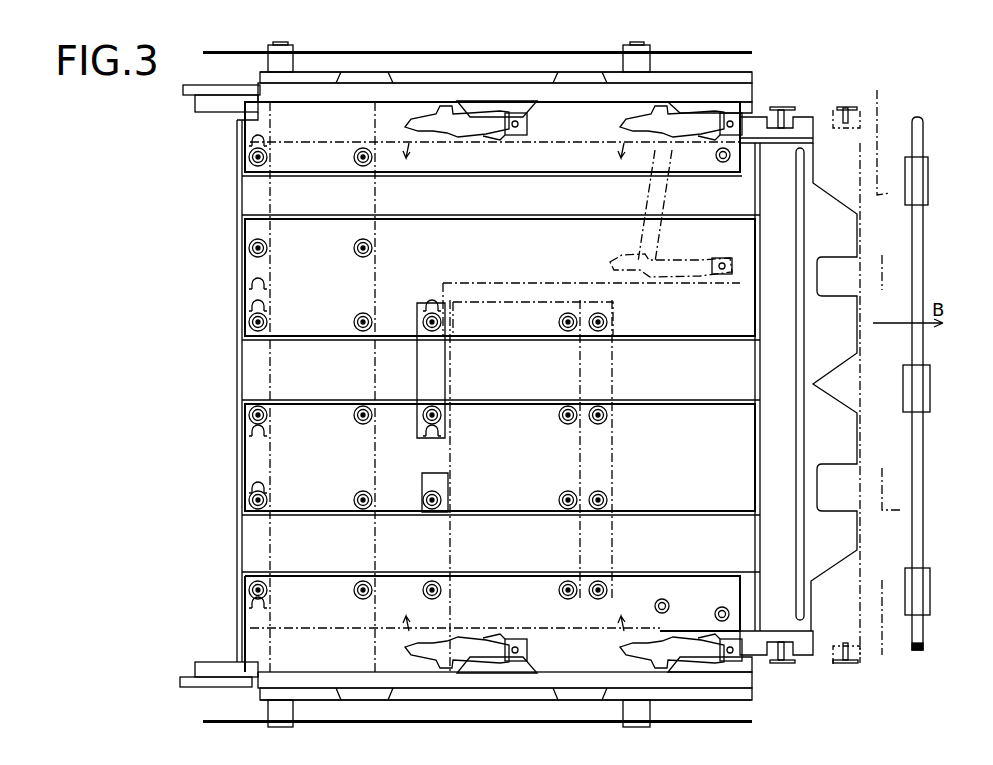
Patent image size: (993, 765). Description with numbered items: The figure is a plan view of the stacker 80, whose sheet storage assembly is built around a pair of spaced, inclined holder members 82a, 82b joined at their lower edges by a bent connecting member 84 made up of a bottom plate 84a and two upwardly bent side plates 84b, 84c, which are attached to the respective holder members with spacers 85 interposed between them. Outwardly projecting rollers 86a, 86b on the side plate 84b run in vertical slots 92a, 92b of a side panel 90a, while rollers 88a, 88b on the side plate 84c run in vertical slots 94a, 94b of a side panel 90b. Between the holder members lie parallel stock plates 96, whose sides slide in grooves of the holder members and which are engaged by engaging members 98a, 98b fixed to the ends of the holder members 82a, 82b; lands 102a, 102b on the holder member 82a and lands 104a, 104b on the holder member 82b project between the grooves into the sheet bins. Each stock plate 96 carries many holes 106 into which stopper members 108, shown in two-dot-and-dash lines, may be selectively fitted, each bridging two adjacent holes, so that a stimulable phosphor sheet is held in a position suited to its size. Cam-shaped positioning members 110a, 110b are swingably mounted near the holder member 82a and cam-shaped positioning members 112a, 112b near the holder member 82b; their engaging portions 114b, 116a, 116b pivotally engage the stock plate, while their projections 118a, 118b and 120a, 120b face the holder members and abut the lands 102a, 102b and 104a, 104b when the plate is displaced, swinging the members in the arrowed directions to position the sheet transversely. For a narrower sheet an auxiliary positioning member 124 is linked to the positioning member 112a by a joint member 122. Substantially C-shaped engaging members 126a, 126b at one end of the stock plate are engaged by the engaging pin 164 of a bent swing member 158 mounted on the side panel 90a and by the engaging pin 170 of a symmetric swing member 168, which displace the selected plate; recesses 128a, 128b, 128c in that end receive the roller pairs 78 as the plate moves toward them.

The roller pairs 78 is at (925, 128).
The stacker 80 is at (183, 373).
The holder member 82a is at (258, 682).
The holder member 82b is at (262, 103).
The connecting member 84 is at (471, 690).
The bottom plate 84a is at (497, 697).
The side plate 84b is at (426, 700).
The side plate 84c is at (448, 72).
The spacers 85 is at (377, 82).
The roller 86a is at (633, 727).
The roller 86b is at (282, 727).
The roller 88a is at (639, 45).
The roller 88b is at (276, 45).
The side panel 90a is at (203, 722).
The side panel 90b is at (243, 52).
The vertical slot 92a is at (652, 727).
The vertical slot 92b is at (262, 727).
The vertical slot 94a is at (664, 50).
The vertical slot 94b is at (300, 46).
The stock plates 96 is at (877, 117).
The engaging member 98a is at (214, 666).
The engaging member 98b is at (205, 103).
The land 102a is at (717, 670).
The land 102b is at (513, 665).
The land 104a is at (720, 105).
The land 104b is at (490, 101).
The holes 106 is at (378, 170).
The stopper members 108 is at (240, 185).
The cam-shaped positioning member 110a is at (695, 650).
The cam-shaped positioning member 110b is at (479, 598).
The cam-shaped positioning member 112a is at (714, 122).
The cam-shaped positioning member 112b is at (507, 154).
The engaging portion 114b is at (514, 650).
The engaging portion 116a is at (742, 112).
The engaging portion 116b is at (530, 120).
The projection 118a is at (654, 598).
The projection 118b is at (451, 598).
The projection 120a is at (713, 122).
The projection 120b is at (474, 154).
The joint member 122 is at (640, 188).
The auxiliary positioning member 124 is at (605, 264).
The C-shaped engaging member 126a is at (804, 655).
The C-shaped engaging member 126b is at (802, 118).
The recess 128a is at (900, 567).
The recess 128b is at (890, 366).
The recess 128c is at (837, 194).
The swing member 158 is at (779, 665).
The engaging pin 164 is at (784, 663).
The swing member 168 is at (781, 106).
The engaging pin 170 is at (874, 97).